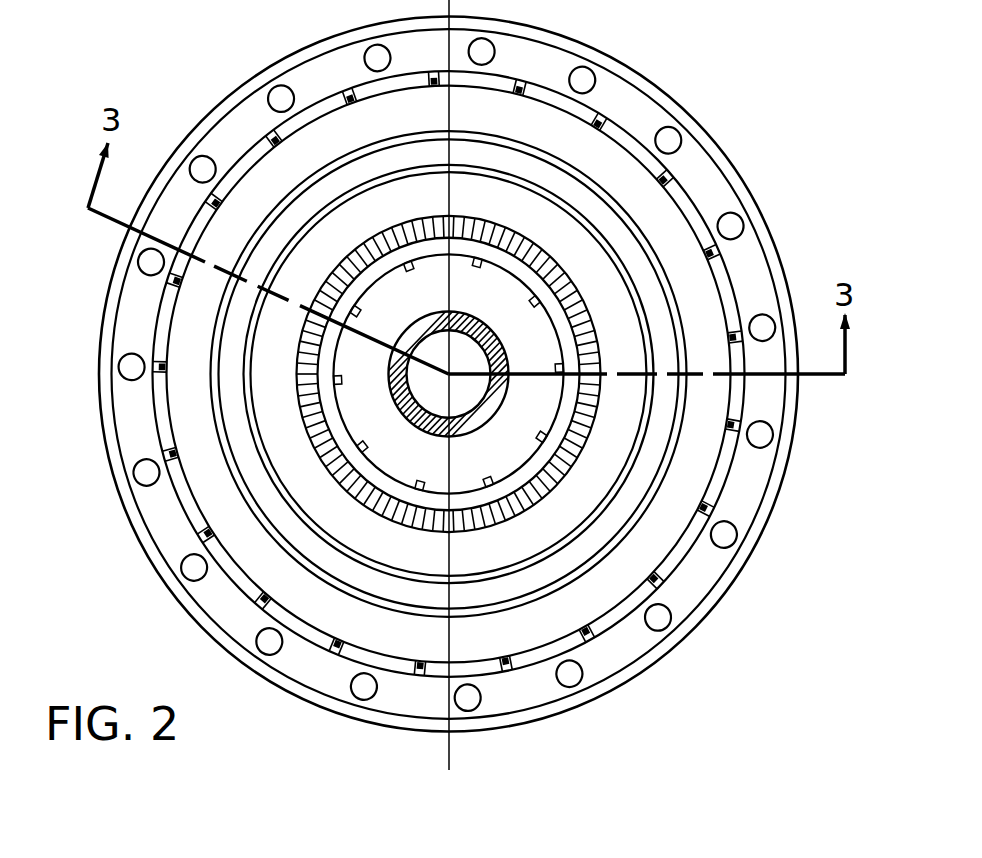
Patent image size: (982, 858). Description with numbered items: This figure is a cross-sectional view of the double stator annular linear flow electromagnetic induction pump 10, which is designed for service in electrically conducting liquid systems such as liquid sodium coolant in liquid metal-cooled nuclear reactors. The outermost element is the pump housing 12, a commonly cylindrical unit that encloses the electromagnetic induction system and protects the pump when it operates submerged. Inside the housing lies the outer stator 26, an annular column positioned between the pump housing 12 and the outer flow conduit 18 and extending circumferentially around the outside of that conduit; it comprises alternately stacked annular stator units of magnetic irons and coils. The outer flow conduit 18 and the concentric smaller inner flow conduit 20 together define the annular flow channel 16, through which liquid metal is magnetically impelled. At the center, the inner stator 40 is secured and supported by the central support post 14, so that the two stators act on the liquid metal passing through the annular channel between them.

The double stator annular linear flow electromagnetic induction pump 10 is at (752, 163).
The pump housing 12 is at (772, 514).
The central support post 14 is at (610, 374).
The annular flow channel 16 is at (230, 382).
The outer flow conduit 18 is at (208, 377).
The inner flow conduit 20 is at (250, 423).
The outer stator 26 is at (153, 310).
The inner stator 40 is at (557, 393).